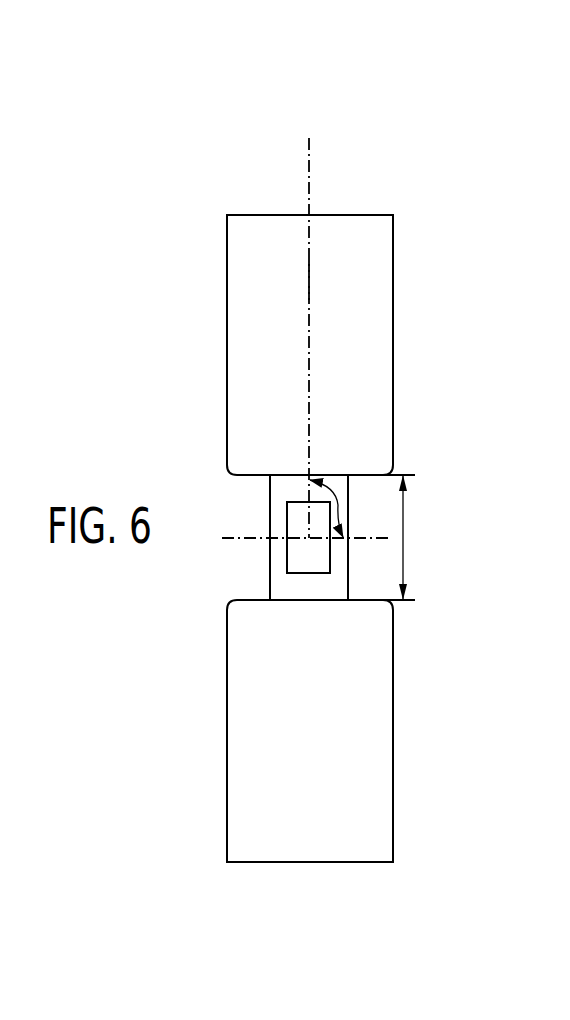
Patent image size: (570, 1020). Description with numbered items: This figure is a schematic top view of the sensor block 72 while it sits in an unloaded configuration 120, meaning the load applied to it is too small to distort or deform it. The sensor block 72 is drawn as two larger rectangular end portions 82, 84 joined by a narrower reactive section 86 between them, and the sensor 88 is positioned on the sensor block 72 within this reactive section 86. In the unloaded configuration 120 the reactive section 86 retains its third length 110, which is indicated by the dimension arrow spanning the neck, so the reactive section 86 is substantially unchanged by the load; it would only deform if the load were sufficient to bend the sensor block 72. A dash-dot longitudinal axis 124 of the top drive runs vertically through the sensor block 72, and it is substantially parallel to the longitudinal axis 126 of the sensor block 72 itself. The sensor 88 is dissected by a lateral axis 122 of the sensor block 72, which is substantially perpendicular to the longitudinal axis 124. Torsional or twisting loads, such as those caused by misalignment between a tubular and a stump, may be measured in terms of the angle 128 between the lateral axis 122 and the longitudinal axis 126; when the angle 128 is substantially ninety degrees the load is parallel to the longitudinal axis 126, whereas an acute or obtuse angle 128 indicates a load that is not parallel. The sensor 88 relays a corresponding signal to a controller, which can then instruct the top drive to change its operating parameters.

The sensor block 72 is at (386, 164).
The first body portion 82 is at (287, 413).
The second body portion 84 is at (287, 674).
The reactive section 86 is at (262, 512).
The sensor 88 is at (320, 566).
The third length 110 is at (404, 538).
The unloaded configuration 120 is at (444, 277).
The lateral axis 122 is at (240, 535).
The longitudinal axis 124 is at (309, 172).
The longitudinal axis 126 is at (309, 282).
The angle 128 is at (338, 505).